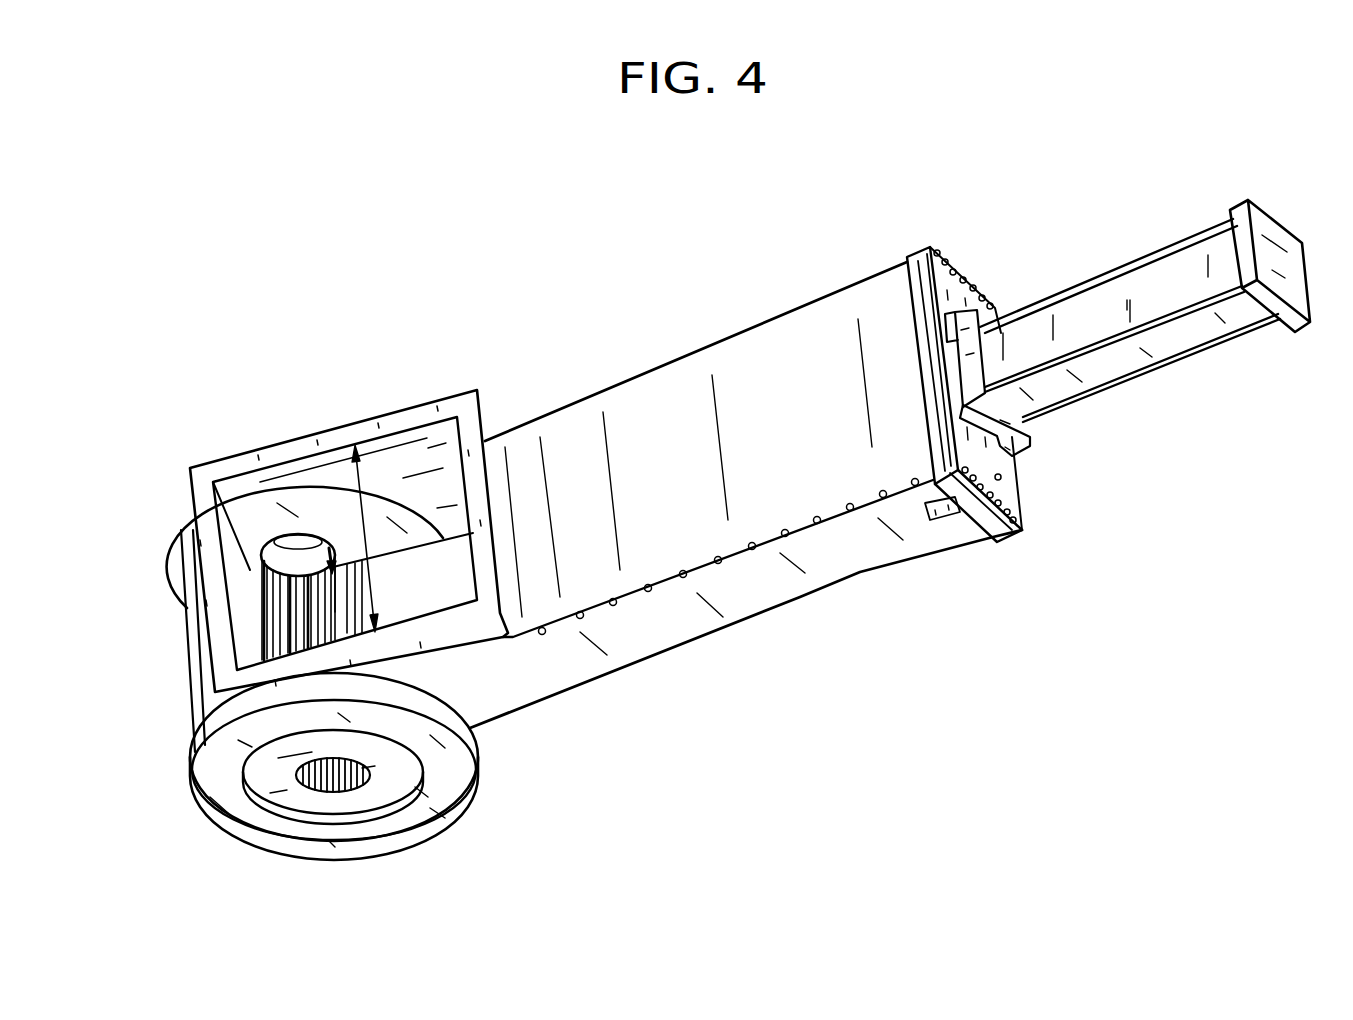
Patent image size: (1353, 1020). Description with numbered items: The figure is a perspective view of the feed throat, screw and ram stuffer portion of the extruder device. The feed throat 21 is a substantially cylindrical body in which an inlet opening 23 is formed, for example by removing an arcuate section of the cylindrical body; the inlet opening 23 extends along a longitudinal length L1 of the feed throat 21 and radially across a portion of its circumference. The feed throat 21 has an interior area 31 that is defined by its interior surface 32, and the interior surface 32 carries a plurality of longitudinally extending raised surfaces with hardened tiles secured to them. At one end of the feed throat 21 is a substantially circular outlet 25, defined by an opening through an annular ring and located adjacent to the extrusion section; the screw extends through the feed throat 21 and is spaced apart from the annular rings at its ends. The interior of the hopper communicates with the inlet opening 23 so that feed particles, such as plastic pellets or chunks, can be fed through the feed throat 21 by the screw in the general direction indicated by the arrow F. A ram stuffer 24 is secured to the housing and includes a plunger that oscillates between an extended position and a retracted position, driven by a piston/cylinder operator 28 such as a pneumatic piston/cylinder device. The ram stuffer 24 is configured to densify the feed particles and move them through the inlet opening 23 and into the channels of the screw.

The feed throat 21 is at (366, 792).
The inlet opening 23 is at (240, 560).
The ram stuffer 24 is at (726, 290).
The outlet 25 is at (300, 559).
The piston/cylinder operator 28 is at (1115, 297).
The interior area 31 is at (295, 618).
The interior surface 32 is at (276, 597).
The arrow F is at (338, 590).
The longitudinal length L1 is at (367, 517).